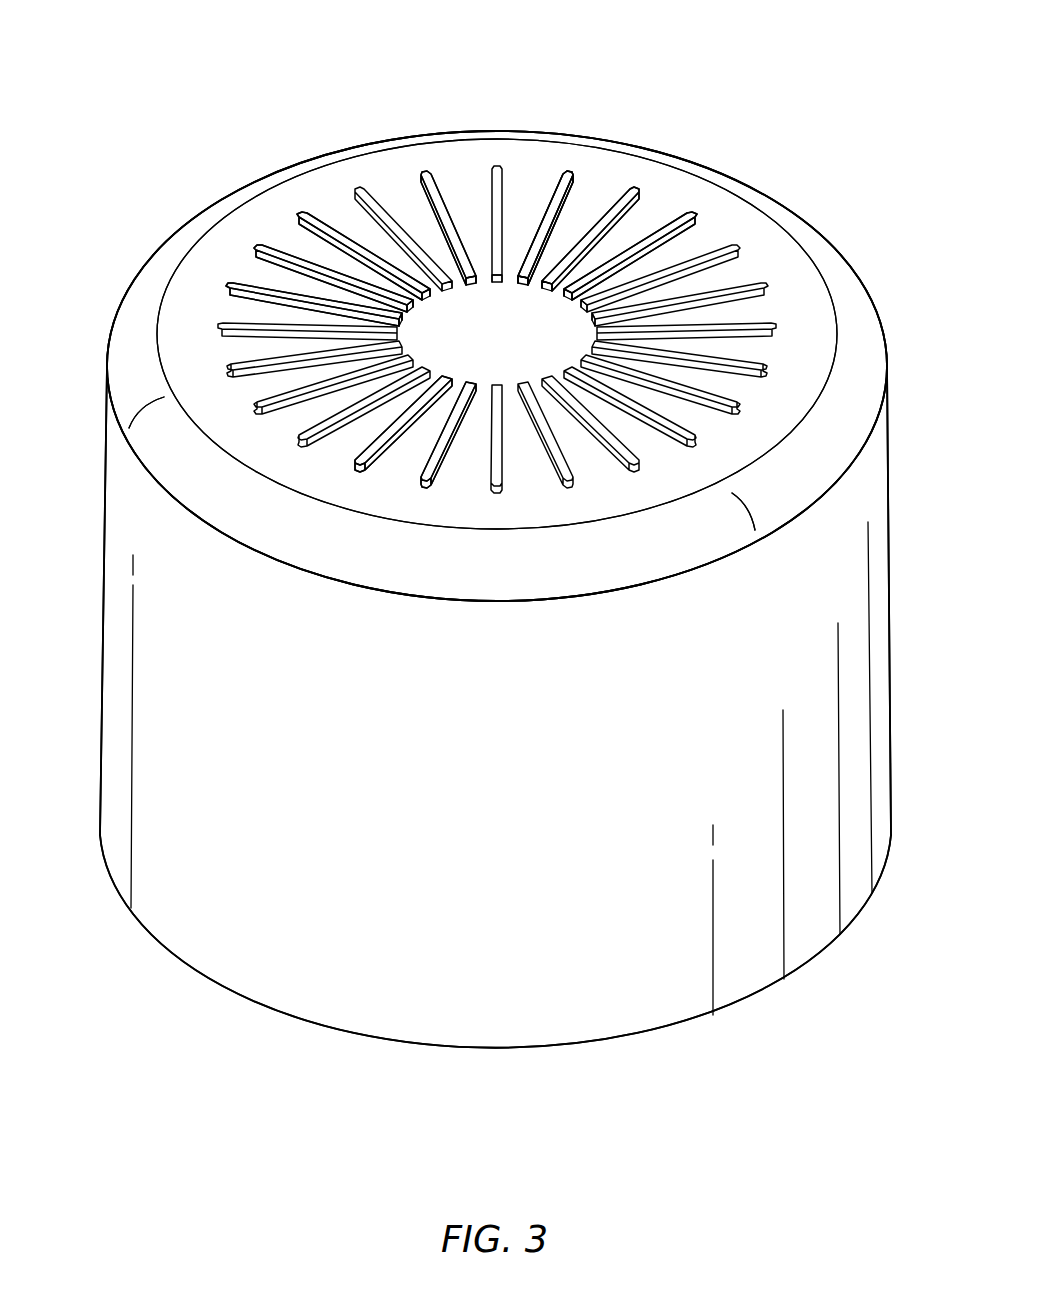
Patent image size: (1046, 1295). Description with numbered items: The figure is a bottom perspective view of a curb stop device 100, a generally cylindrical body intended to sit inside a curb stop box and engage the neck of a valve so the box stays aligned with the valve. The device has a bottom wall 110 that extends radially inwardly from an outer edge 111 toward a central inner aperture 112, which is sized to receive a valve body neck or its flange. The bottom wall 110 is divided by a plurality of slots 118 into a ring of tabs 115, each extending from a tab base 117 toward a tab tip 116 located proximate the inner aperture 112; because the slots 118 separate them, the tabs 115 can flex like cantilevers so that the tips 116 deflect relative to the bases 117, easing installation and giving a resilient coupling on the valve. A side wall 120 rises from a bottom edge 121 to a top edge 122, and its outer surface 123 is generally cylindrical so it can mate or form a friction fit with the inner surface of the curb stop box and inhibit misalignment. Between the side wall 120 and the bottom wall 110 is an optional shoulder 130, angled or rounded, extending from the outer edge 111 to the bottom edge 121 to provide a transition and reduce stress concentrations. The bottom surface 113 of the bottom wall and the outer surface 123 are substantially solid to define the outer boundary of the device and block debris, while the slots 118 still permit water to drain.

The curb stop device 100 is at (136, 48).
The bottom wall 110 is at (678, 193).
The outer edge 111 is at (790, 232).
The inner aperture 112 is at (499, 330).
The bottom wall bottom surface 113 is at (750, 237).
The tabs 115 is at (468, 212).
The tab tips 116 is at (512, 283).
The tab bases 117 is at (648, 207).
The slots 118 is at (336, 216).
The side wall 120 is at (833, 580).
The bottom edge 121 is at (852, 468).
The top edge 122 is at (752, 1000).
The outer surface 123 is at (478, 797).
The shoulder 130 is at (847, 307).